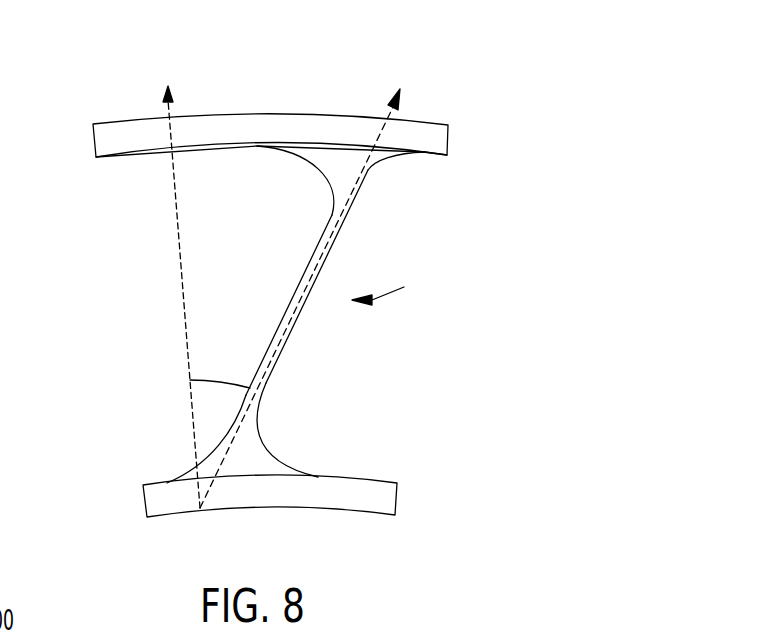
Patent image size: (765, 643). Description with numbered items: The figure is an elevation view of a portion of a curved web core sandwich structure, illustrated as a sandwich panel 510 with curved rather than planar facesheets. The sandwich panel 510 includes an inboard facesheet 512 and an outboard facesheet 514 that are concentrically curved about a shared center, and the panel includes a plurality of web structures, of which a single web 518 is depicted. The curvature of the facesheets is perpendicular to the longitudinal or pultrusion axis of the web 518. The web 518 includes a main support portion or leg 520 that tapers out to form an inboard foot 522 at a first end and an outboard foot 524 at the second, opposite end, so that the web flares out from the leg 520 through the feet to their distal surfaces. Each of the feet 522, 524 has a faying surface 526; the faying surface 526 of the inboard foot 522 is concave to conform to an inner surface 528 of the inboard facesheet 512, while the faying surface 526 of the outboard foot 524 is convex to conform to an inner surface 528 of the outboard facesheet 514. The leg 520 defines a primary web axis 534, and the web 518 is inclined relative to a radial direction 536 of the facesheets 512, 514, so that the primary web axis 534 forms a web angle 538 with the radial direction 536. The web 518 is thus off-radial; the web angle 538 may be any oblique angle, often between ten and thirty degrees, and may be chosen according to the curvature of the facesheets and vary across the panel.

The sandwich panel 510 is at (258, 287).
The inboard facesheet 512 is at (383, 495).
The outboard facesheet 514 is at (438, 133).
The web 518 is at (396, 285).
The leg 520 is at (296, 321).
The inboard foot 522 is at (256, 456).
The outboard foot 524 is at (378, 157).
The faying surface 526 is at (339, 125).
The inner surface 528 is at (207, 165).
The primary web axis 534 is at (326, 252).
The radial direction 536 is at (177, 238).
The web angle 538 is at (222, 378).